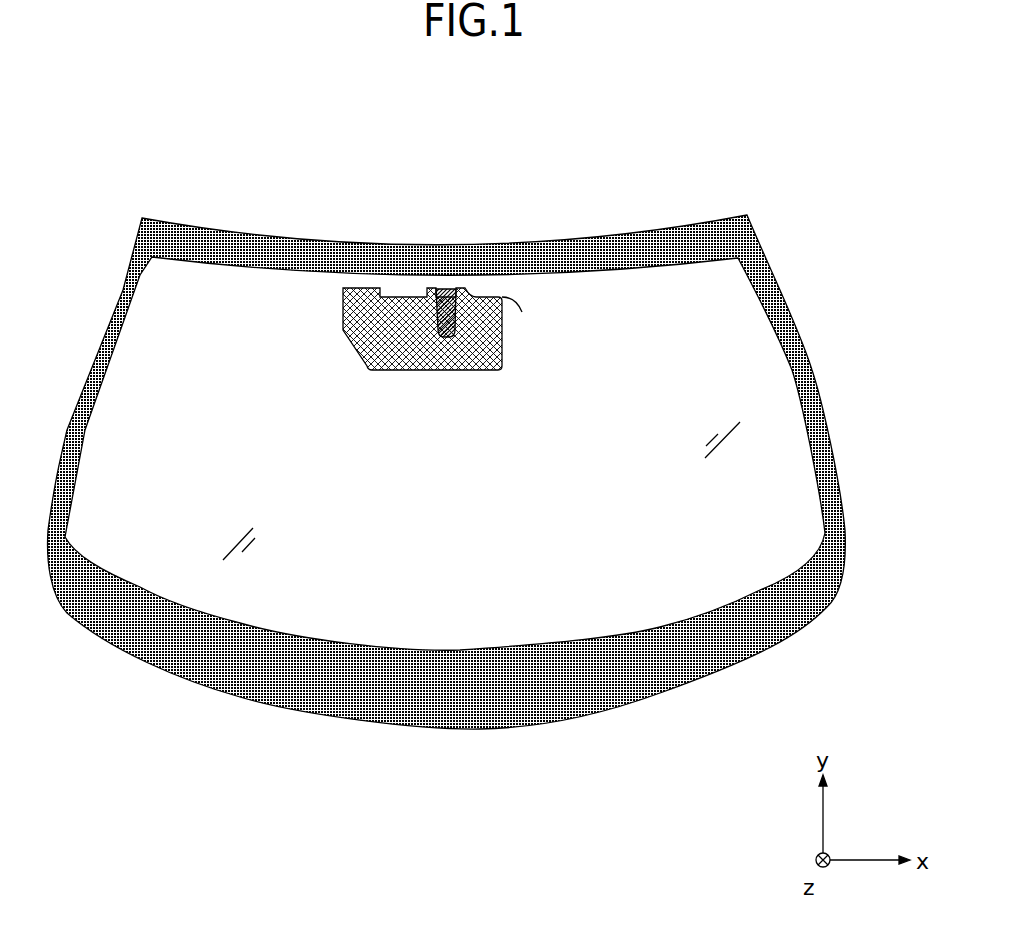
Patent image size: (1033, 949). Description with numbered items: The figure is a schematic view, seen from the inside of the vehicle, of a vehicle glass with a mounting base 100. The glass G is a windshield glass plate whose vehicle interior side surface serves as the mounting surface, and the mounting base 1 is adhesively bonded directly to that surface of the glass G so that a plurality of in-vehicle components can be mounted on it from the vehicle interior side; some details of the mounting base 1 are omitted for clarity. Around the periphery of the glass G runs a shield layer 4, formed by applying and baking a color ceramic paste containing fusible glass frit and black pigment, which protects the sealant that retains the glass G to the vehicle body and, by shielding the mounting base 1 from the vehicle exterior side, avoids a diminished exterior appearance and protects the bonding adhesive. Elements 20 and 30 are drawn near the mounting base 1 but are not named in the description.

The vehicle glass with a mounting base 100 is at (829, 138).
The shield layer 4 is at (258, 248).
The mounting base 1 is at (363, 287).
The sensor 20 is at (442, 289).
The cover 30 is at (505, 300).
The glass G is at (773, 408).